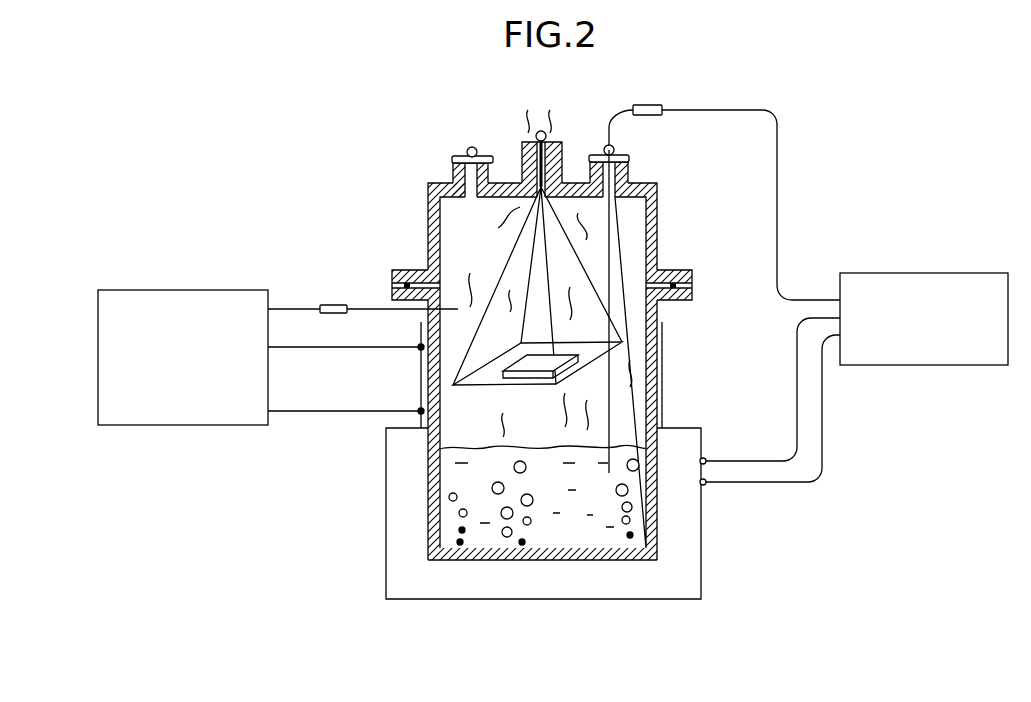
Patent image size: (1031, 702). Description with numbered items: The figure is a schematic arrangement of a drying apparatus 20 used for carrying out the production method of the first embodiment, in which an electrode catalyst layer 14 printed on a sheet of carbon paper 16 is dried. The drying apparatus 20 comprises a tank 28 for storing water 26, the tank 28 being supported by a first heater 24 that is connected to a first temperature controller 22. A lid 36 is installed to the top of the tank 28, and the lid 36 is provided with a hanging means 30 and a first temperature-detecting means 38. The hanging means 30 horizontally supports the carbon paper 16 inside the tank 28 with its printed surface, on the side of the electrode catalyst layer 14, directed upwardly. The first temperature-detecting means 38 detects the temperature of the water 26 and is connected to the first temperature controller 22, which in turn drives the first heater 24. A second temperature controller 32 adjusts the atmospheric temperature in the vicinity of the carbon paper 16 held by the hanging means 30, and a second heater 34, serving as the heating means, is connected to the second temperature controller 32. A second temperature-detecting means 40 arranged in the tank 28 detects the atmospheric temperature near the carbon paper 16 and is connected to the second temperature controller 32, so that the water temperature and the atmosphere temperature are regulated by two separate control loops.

The drying apparatus 20 is at (430, 121).
The electrode catalyst layer 14 is at (527, 363).
The carbon paper 16 is at (538, 378).
The first temperature controller 22 is at (987, 273).
The first heater 24 is at (600, 587).
The water 26 is at (632, 521).
The tank 28 is at (421, 400).
The hanging means 30 is at (454, 349).
The second temperature controller 32 is at (218, 290).
The second heater 34 is at (662, 332).
The lid 36 is at (657, 220).
The first temperature-detecting means 38 is at (613, 407).
The second temperature-detecting means 40 is at (360, 305).